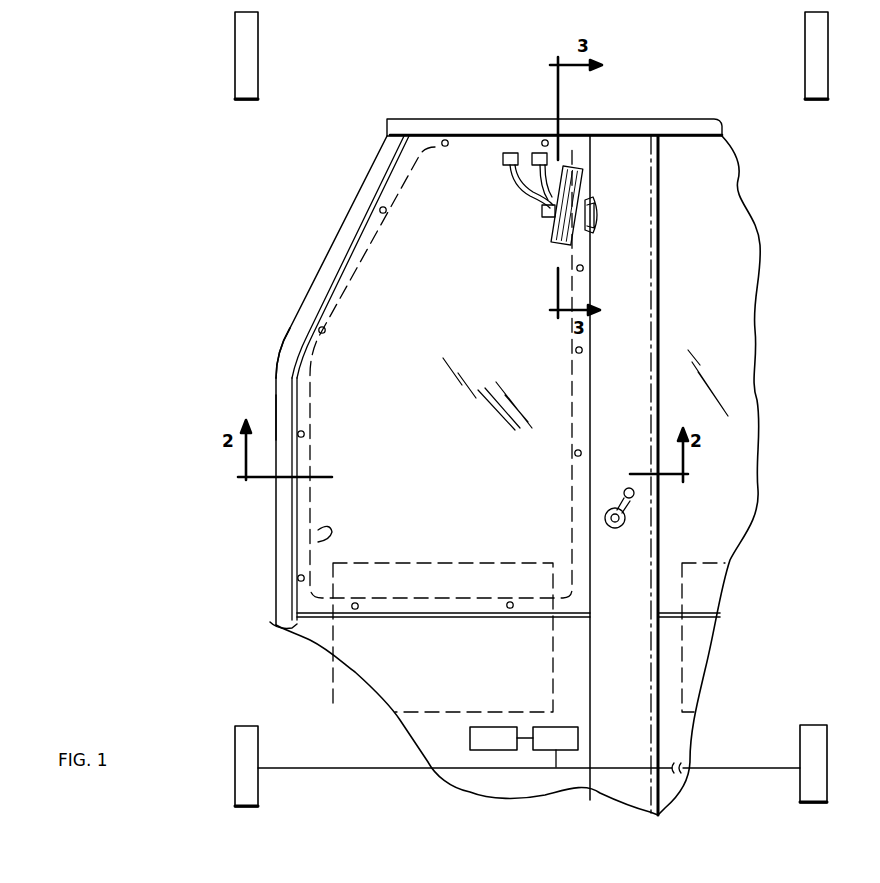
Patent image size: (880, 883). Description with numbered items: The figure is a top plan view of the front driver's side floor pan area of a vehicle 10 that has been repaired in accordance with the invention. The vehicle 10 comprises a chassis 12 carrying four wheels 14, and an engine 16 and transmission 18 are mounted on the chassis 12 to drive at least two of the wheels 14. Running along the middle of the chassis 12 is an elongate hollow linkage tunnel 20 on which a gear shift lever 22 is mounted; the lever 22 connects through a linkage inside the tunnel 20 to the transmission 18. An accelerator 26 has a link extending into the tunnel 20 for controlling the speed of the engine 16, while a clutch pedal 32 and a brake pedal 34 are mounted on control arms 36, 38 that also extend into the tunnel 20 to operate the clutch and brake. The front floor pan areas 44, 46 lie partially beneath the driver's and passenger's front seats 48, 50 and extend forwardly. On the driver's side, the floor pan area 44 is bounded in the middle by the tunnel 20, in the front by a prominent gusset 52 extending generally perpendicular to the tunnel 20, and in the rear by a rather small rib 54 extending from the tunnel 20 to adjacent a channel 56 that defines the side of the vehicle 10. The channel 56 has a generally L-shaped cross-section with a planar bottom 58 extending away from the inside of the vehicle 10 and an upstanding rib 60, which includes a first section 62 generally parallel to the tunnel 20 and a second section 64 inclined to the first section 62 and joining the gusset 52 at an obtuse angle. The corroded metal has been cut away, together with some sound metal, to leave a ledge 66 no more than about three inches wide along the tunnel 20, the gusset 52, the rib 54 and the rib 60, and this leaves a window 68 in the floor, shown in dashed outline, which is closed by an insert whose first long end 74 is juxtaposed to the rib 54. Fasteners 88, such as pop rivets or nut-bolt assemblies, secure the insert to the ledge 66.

The vehicle 10 is at (114, 350).
The chassis 12 is at (272, 620).
The wheels 14 is at (258, 88).
The engine 16 is at (501, 739).
The transmission 18 is at (555, 747).
The linkage tunnel 20 is at (640, 340).
The gear shift lever 22 is at (632, 510).
The accelerator 26 is at (552, 228).
The clutch pedal 32 is at (506, 170).
The brake pedal 34 is at (538, 152).
The control arm 36 is at (522, 198).
The control arm 38 is at (548, 165).
The front floor pan area 44 is at (283, 372).
The front floor pan area 46 is at (727, 352).
The front seat 48 is at (551, 657).
The front seat 50 is at (690, 700).
The gusset 52 is at (414, 130).
The rib 54 is at (431, 620).
The channel 56 is at (272, 521).
The planar bottom 58 is at (283, 418).
The upstanding rib 60 is at (305, 436).
The first channel section 62 is at (276, 494).
The second channel section 64 is at (333, 249).
The ledge 66 is at (305, 373).
The window 68 is at (380, 270).
The first long end 74 is at (312, 538).
The fasteners 88 is at (326, 340).